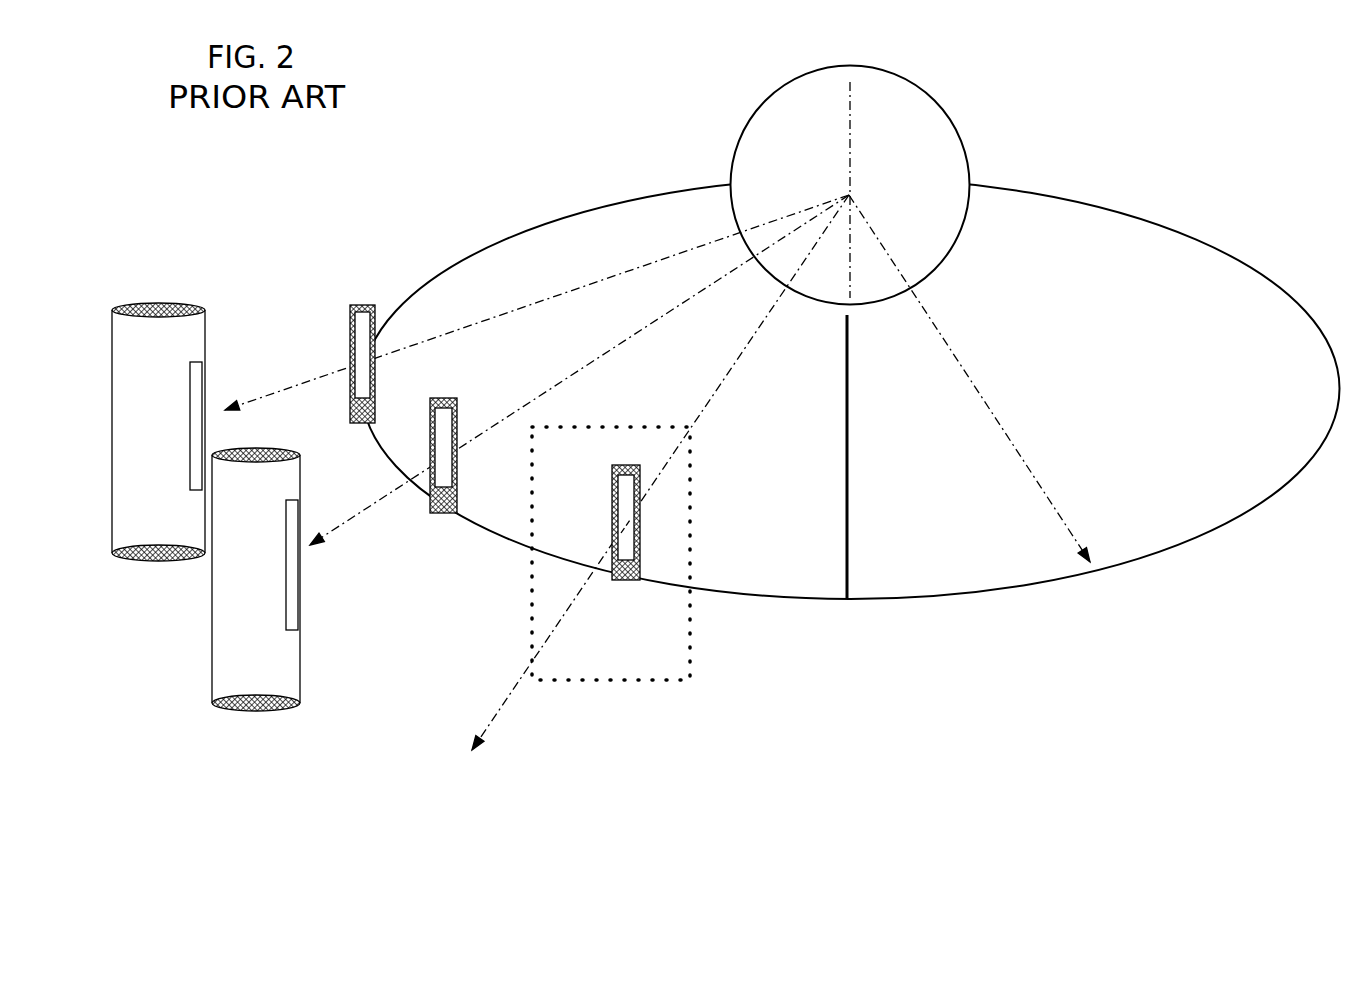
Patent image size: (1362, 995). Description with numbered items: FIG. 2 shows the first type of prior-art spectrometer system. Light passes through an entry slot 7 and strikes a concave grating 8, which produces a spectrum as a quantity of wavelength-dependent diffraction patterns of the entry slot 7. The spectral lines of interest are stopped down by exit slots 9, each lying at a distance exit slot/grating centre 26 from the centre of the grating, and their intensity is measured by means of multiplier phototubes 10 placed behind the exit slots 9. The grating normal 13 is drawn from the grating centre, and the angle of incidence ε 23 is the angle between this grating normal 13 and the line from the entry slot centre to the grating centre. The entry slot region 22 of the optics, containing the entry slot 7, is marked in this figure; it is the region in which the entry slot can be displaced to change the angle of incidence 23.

The entry slot 7 is at (620, 616).
The concave grating 8 is at (802, 148).
The exit slot 9 is at (437, 364).
The multiplier phototube 10 is at (140, 596).
The grating normal 13 is at (851, 388).
The entry slot region 22 is at (708, 652).
The angle of incidence ε 23 is at (830, 400).
The distance exit slot/grating centre 26 is at (657, 472).